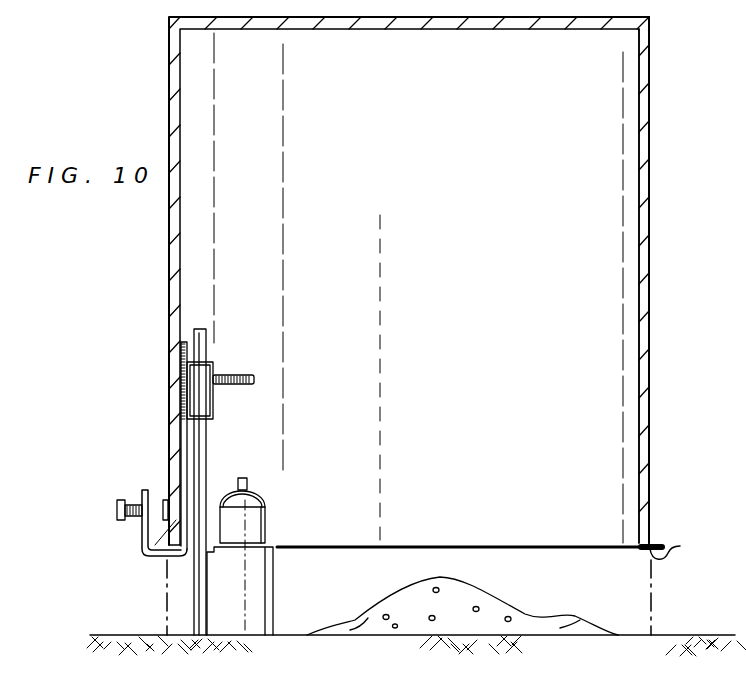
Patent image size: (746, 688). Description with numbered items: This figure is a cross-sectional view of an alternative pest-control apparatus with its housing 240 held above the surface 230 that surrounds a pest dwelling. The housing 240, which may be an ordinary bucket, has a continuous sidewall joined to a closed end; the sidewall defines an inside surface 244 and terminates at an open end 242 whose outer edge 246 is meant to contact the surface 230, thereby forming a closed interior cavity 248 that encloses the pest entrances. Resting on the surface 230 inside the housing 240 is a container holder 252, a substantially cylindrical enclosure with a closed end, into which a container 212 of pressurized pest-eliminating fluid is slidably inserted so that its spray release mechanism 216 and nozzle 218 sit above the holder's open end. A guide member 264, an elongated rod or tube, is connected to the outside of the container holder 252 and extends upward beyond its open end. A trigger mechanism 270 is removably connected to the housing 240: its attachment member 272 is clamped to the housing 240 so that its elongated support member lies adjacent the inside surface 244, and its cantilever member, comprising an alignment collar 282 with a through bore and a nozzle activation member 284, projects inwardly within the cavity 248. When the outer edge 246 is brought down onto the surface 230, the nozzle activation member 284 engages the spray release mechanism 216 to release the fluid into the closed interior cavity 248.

The surface 230 is at (637, 635).
The housing 240 is at (162, 257).
The inside surface 244 is at (639, 193).
The closed interior cavity 248 is at (428, 161).
The outer edge 246 is at (678, 555).
The open end 242 is at (594, 564).
The guide member 264 is at (209, 457).
The alignment collar 282 is at (215, 398).
The nozzle activation member 284 is at (235, 373).
The attachment member 272 is at (181, 440).
The trigger mechanism 270 is at (128, 539).
The container 212 is at (276, 521).
The spray release mechanism 216 is at (258, 494).
The nozzle 218 is at (247, 482).
The container holder 252 is at (273, 587).